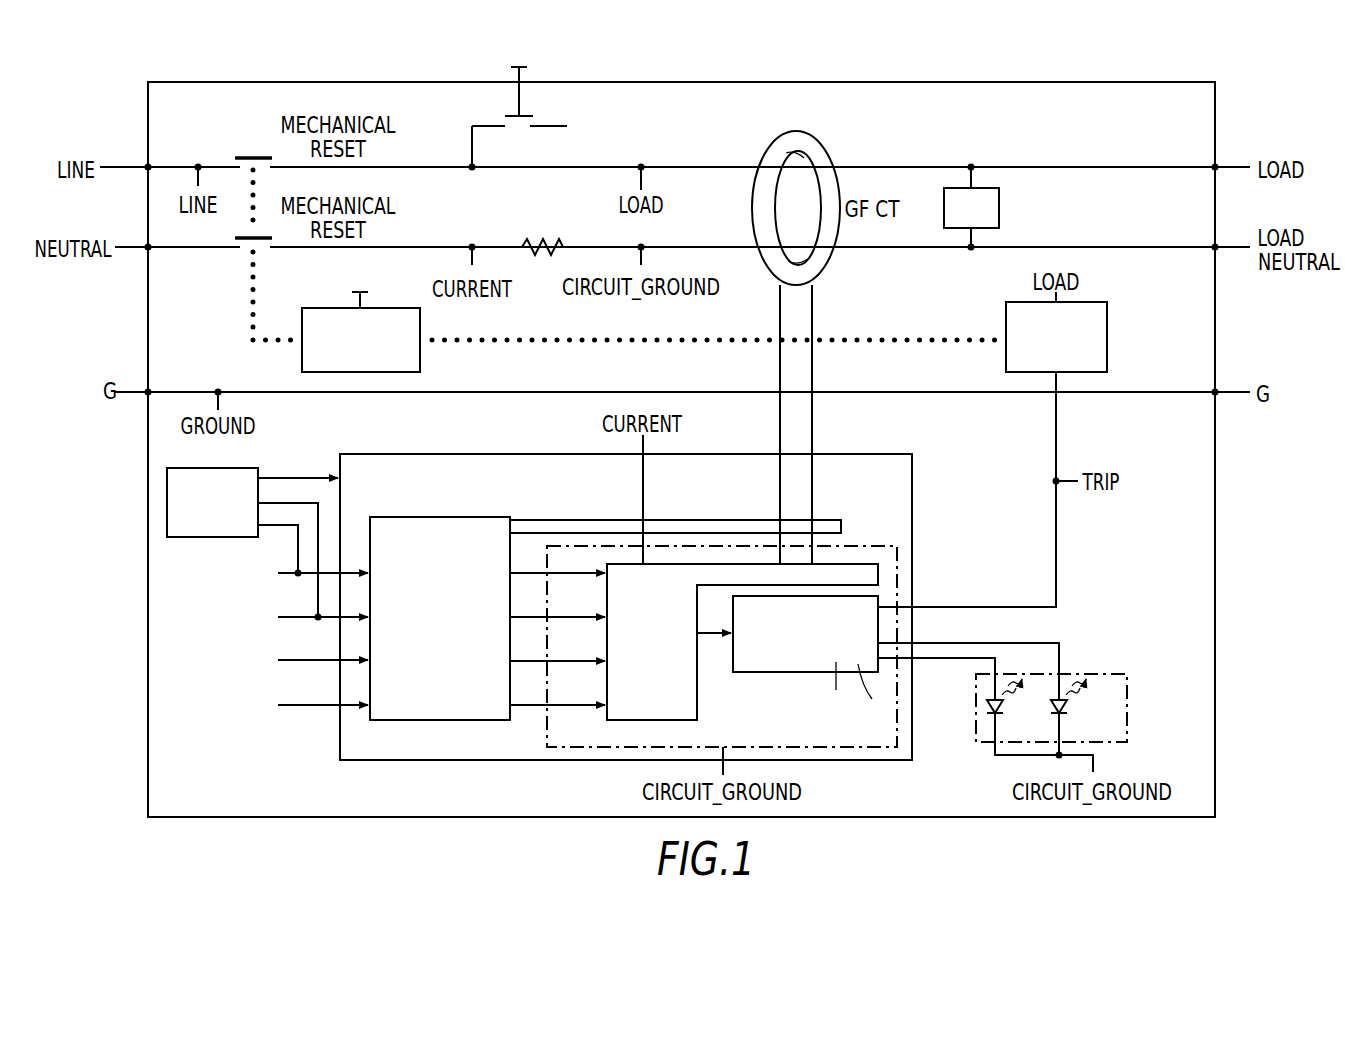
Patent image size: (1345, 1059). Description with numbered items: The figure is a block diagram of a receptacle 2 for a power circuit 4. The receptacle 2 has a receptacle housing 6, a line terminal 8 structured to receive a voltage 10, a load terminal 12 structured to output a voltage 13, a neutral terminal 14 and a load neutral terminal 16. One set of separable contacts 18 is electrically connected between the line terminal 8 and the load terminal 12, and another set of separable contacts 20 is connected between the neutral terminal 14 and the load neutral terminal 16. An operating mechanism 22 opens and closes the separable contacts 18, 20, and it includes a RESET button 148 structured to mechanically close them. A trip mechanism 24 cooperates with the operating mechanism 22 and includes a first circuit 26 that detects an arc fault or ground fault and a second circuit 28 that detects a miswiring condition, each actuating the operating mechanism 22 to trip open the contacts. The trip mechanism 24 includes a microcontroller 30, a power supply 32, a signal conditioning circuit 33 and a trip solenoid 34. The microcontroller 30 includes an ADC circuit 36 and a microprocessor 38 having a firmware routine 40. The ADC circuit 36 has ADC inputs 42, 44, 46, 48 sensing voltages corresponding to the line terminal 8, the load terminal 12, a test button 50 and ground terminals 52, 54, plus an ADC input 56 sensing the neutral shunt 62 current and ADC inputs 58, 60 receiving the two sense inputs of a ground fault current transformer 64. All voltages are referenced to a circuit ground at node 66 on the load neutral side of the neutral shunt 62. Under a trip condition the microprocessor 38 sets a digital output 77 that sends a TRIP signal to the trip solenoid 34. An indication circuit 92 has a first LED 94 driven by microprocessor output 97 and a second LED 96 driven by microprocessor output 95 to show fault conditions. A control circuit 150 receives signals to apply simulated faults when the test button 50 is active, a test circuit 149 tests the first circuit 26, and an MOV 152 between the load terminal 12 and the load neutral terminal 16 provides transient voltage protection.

The receptacle 2 is at (88, 709).
The power circuit 4 is at (86, 131).
The receptacle housing 6 is at (147, 768).
The line terminal 8 is at (147, 165).
The voltage 10 is at (127, 171).
The load terminal 12 is at (1217, 166).
The voltage 13 is at (1234, 172).
The neutral terminal 14 is at (147, 249).
The load neutral terminal 16 is at (1217, 250).
The separable contacts 18 is at (239, 150).
The separable contacts 20 is at (237, 266).
The operating mechanism 22 is at (421, 360).
The trip mechanism 24 is at (184, 605).
The first circuit 26 is at (447, 745).
The second circuit 28 is at (835, 691).
The microcontroller 30 is at (545, 565).
The power supply 32 is at (200, 538).
The signal conditioning circuit 33 is at (400, 722).
The trip solenoid 34 is at (1108, 325).
The ADC circuit 36 is at (700, 700).
The microprocessor 38 is at (755, 673).
The firmware routine 40 is at (874, 693).
The ADC input 42 is at (605, 578).
The ADC input 44 is at (605, 622).
The ADC input 46 is at (605, 666).
The ADC input 48 is at (605, 711).
The test button 50 is at (481, 71).
The ground terminal 52 is at (147, 393).
The ground terminal 54 is at (1217, 395).
The ADC input 56 is at (643, 563).
The ADC input 58 is at (780, 563).
The ADC input 60 is at (812, 563).
The neutral shunt 62 is at (535, 244).
The ground fault current transformer 64 is at (820, 138).
The node 66 is at (648, 245).
The digital output 77 is at (880, 603).
The indication circuit 92 is at (1131, 678).
The first LED 94 is at (1003, 710).
The microprocessor output 95 is at (880, 640).
The second LED 96 is at (1067, 710).
The microprocessor output 97 is at (880, 660).
The RESET button 148 is at (336, 296).
The test circuit 149 is at (895, 485).
The control circuit 150 is at (394, 466).
The MOV 152 is at (1000, 212).